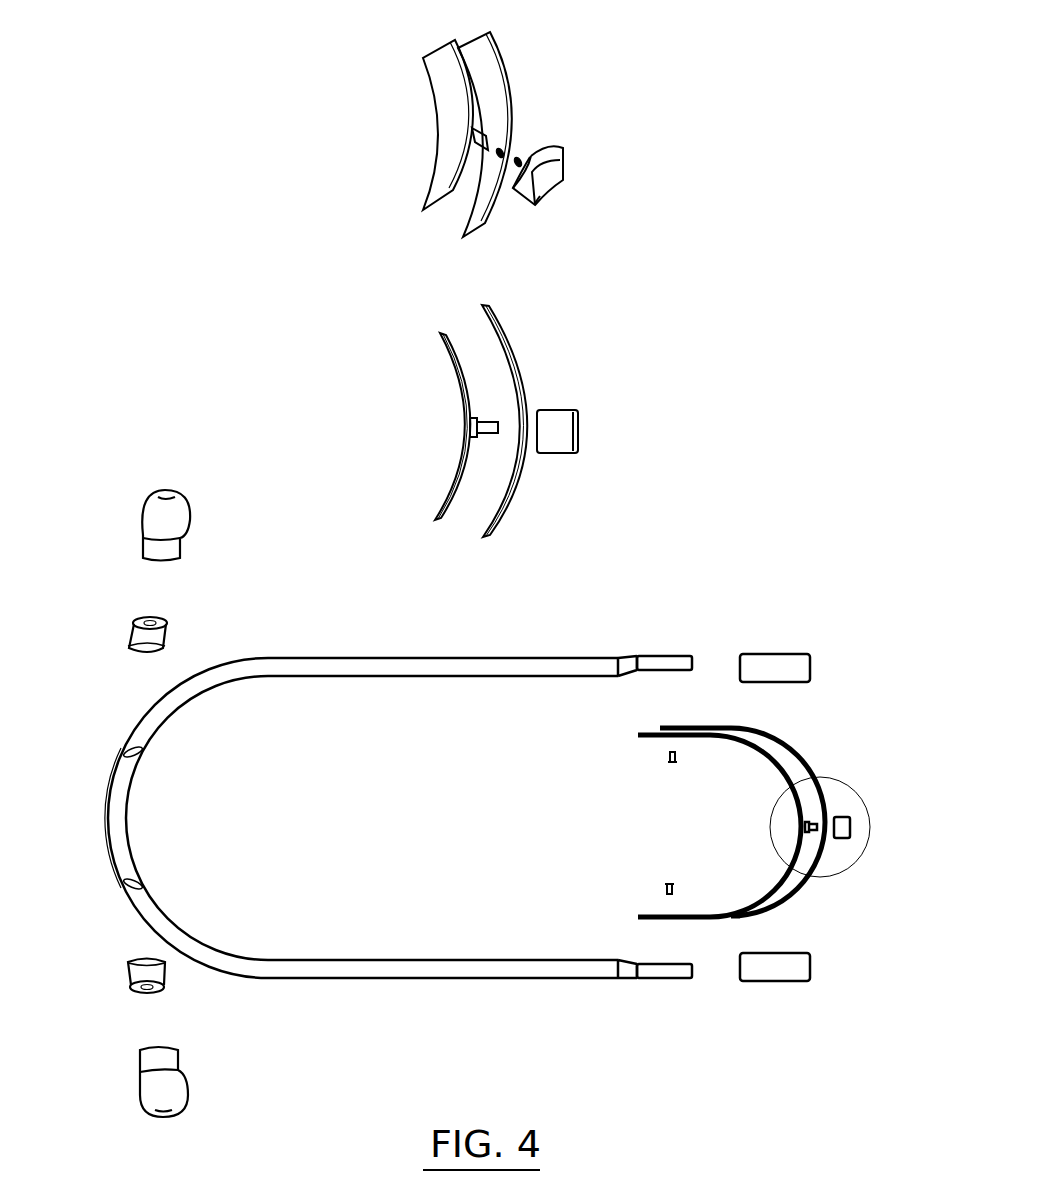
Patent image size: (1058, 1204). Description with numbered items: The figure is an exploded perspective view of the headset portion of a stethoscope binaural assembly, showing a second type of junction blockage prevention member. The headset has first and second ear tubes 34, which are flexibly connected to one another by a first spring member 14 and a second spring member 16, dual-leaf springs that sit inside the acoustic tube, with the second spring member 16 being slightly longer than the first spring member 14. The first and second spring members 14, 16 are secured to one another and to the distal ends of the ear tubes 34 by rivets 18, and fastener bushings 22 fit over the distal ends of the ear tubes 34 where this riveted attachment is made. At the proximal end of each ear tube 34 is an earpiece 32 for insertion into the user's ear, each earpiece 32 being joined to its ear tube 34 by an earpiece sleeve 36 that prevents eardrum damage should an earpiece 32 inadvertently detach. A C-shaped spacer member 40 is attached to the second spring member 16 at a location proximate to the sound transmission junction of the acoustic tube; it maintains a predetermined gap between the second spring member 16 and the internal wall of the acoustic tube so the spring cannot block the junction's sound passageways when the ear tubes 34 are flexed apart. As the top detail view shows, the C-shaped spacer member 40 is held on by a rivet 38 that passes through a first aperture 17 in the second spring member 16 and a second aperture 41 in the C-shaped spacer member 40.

The first spring member 14 is at (450, 110).
The second spring member 16 is at (512, 98).
The first aperture 17 is at (502, 158).
The rivets 18 is at (665, 757).
The fastener bushings 22 is at (775, 660).
The earpieces 32 is at (165, 525).
The ear tubes 34 is at (318, 665).
The earpiece sleeves 36 is at (140, 632).
The rivet 38 is at (492, 143).
The C-shaped spacer member 40 is at (550, 160).
The second aperture 41 is at (535, 183).